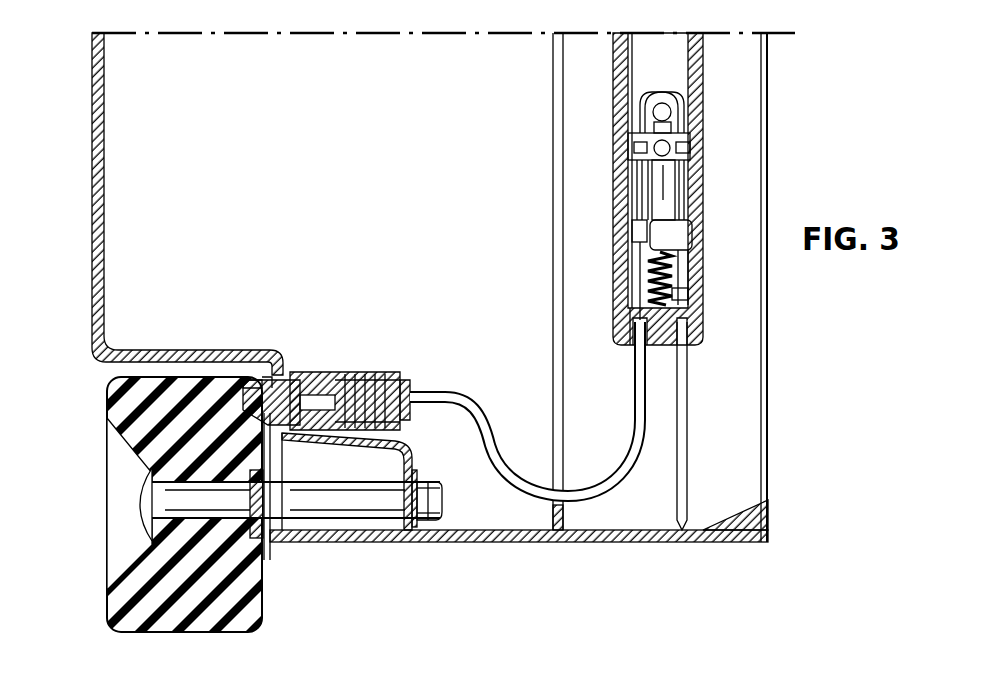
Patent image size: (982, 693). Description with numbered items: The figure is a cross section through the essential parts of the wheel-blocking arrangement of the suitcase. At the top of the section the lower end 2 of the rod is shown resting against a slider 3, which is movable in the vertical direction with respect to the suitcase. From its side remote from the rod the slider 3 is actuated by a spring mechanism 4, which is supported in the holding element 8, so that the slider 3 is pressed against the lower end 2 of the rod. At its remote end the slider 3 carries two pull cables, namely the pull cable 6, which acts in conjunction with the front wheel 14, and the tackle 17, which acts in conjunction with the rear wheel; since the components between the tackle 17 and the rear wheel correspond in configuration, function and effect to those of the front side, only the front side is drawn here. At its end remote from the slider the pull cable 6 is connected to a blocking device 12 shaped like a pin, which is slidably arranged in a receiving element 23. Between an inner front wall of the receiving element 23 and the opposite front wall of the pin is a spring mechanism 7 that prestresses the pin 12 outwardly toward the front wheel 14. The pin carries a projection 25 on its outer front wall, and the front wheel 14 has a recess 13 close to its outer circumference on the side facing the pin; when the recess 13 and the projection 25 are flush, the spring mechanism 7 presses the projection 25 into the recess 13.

The lower end of rod 2 is at (628, 150).
The slider 3 is at (640, 183).
The spring mechanism 4 is at (646, 265).
The pull cable 6 is at (622, 295).
The spring mechanism 7 is at (376, 372).
The holding element 8 is at (704, 80).
The blocking device 12 is at (300, 377).
The recess 13 is at (250, 380).
The front wheel 14 is at (122, 405).
The tackle 17 is at (688, 288).
The receiving element 23 is at (345, 372).
The projection 25 is at (264, 378).